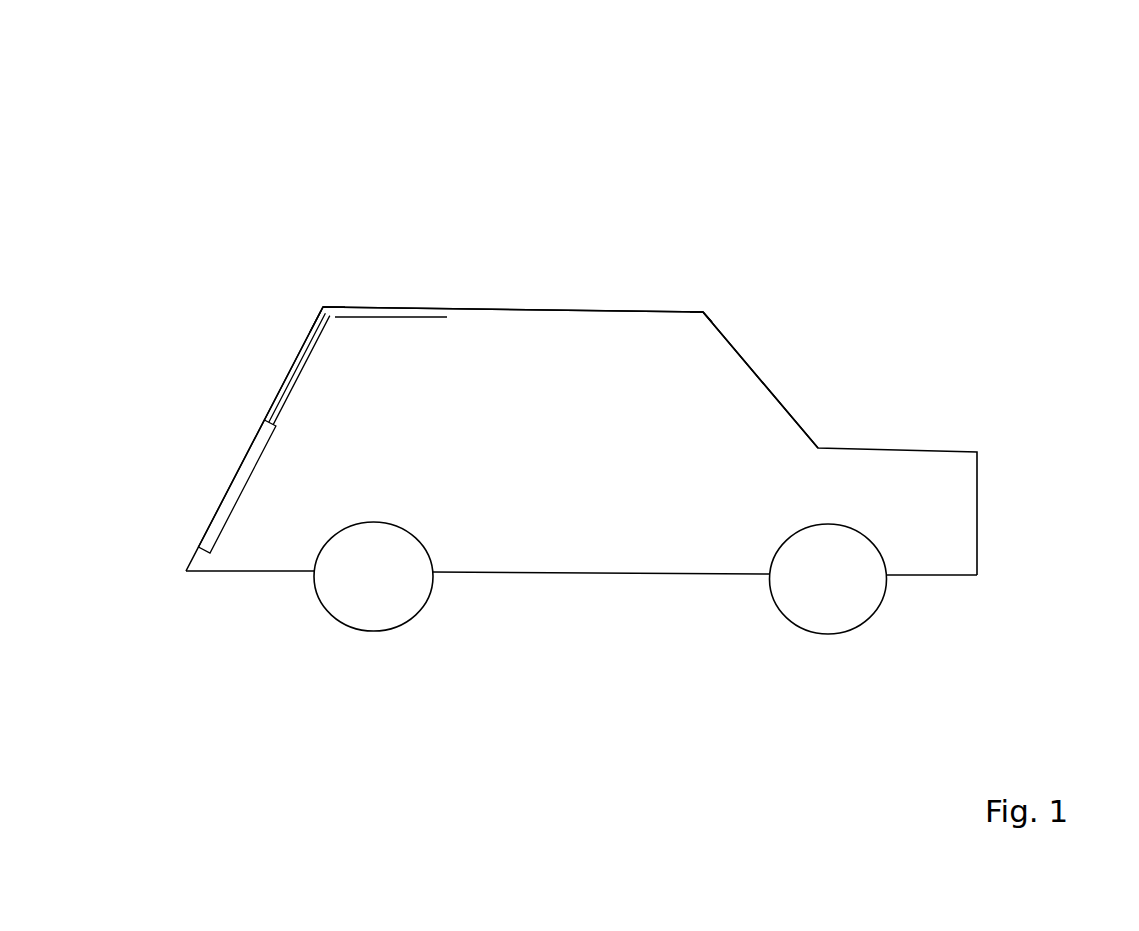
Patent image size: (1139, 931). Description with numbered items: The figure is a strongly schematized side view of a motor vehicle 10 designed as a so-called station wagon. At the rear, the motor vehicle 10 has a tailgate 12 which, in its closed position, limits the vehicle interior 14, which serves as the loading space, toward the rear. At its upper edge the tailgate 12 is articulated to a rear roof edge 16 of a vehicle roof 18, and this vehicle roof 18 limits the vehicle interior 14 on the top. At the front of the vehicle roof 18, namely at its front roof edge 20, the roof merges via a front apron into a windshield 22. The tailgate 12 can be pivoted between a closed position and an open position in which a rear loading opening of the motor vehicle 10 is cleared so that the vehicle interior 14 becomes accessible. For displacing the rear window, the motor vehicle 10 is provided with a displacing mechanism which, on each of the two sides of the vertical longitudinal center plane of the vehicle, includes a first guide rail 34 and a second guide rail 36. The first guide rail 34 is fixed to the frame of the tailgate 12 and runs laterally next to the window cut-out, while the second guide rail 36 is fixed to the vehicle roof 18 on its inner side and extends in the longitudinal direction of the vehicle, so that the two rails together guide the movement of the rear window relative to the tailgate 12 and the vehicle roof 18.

The motor vehicle 10 is at (808, 190).
The tailgate 12 is at (232, 497).
The vehicle interior 14 is at (415, 464).
The rear roof edge 16 is at (323, 307).
The vehicle roof 18 is at (605, 311).
The front roof edge 20 is at (703, 312).
The windshield 22 is at (768, 386).
The first guide rail 34 is at (303, 350).
The second guide rail 36 is at (383, 317).